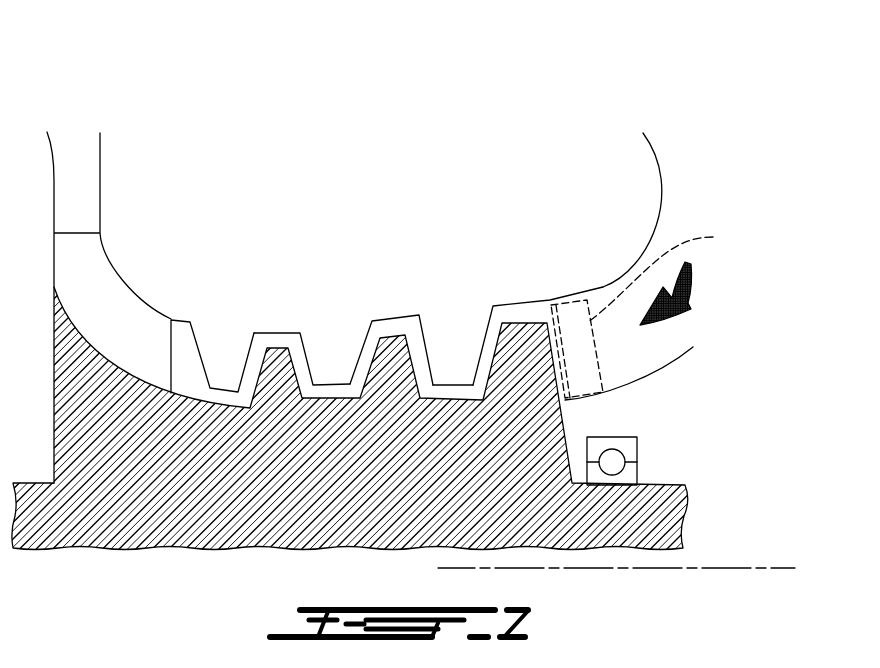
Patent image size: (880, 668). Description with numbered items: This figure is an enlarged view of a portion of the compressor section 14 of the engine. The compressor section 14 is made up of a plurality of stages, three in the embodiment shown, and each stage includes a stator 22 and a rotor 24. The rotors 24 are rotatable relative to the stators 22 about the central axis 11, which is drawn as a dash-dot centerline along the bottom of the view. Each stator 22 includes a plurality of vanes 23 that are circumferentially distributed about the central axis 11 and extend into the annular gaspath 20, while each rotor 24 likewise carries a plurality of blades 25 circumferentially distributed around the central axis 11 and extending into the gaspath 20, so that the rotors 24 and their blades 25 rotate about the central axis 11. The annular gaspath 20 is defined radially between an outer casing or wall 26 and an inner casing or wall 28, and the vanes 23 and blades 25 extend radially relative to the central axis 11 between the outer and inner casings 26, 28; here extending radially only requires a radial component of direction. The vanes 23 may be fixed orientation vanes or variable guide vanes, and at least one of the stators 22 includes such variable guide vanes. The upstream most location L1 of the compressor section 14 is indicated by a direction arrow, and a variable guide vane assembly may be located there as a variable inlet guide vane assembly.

The compressor section 14 is at (315, 158).
The annular gaspath 20 is at (102, 307).
The stator 22 is at (332, 348).
The vanes 23 is at (222, 350).
The rotor 24 is at (497, 323).
The blades 25 is at (515, 355).
The outer casing 26 is at (603, 287).
The inner casing 28 is at (655, 377).
The central axis 11 is at (725, 568).
The upstream most location L1 is at (665, 274).